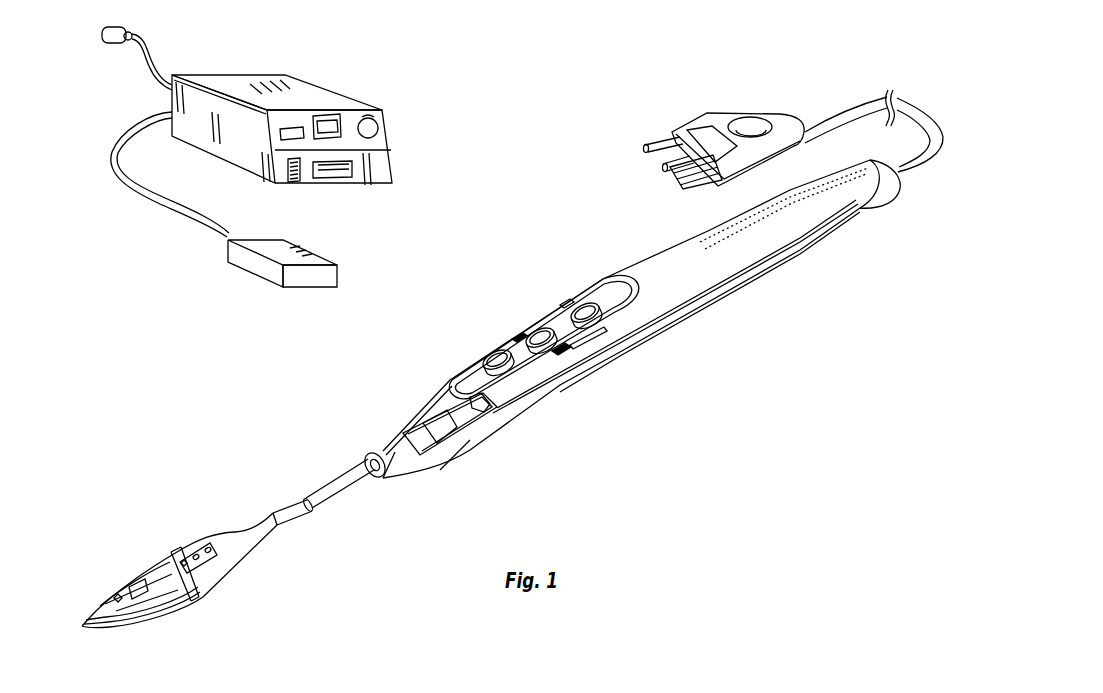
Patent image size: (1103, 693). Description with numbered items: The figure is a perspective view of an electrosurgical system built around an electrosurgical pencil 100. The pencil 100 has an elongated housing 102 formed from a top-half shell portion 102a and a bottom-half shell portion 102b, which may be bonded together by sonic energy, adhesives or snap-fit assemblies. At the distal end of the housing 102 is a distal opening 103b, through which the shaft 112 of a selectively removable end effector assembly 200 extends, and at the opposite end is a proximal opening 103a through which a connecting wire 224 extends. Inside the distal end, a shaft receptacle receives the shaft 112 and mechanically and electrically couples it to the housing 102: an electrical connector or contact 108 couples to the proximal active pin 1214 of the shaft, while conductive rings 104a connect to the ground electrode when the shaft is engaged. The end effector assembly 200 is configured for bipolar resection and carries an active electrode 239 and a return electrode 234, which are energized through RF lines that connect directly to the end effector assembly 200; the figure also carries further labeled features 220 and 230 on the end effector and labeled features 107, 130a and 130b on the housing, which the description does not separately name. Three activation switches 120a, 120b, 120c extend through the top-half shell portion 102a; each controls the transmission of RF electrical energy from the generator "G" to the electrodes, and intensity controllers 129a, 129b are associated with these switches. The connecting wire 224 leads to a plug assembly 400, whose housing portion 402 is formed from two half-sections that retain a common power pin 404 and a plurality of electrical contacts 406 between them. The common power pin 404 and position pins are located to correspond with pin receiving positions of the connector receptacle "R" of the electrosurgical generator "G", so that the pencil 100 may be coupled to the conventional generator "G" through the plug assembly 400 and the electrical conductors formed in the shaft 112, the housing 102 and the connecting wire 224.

The electrosurgical pencil 100 is at (466, 259).
The elongated housing 102 is at (652, 261).
The top-half shell portion 102a is at (702, 237).
The bottom-half shell portion 102b is at (750, 286).
The proximal opening 103a is at (904, 174).
The distal opening 103b is at (366, 455).
The conductive rings 104a is at (450, 430).
The button panel 107 is at (641, 313).
The electrical connector 108 is at (466, 394).
The shaft 112 is at (346, 470).
The activation switch 120a is at (495, 351).
The activation switch 120b is at (530, 327).
The activation switch 120c is at (578, 304).
The intensity controller 129a is at (516, 334).
The intensity controller 129b is at (566, 355).
The first rib 130a is at (565, 302).
The second rib 130b is at (604, 335).
The active pin 1214 is at (493, 417).
The end effector assembly 200 is at (132, 496).
The end effector body 220 is at (216, 529).
The connecting wire 224 is at (946, 110).
The blade tip 230 is at (86, 597).
The return electrode 234 is at (104, 592).
The active electrode 239 is at (130, 629).
The plug assembly 400 is at (704, 101).
The housing portion 402 is at (757, 114).
The common power pin 404 is at (703, 191).
The electrical contacts 406 is at (677, 183).
The electrosurgical generator G is at (311, 77).
The connector receptacle R is at (331, 169).